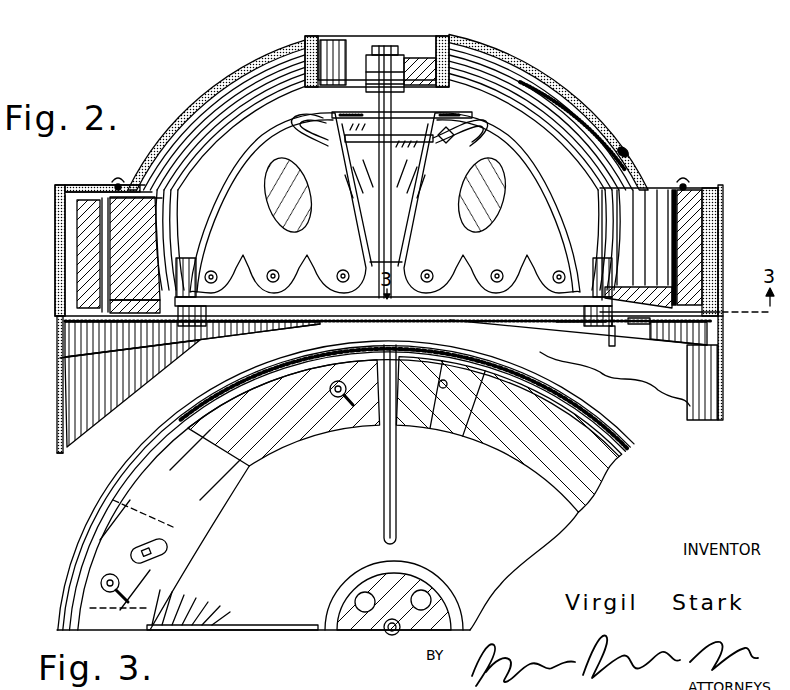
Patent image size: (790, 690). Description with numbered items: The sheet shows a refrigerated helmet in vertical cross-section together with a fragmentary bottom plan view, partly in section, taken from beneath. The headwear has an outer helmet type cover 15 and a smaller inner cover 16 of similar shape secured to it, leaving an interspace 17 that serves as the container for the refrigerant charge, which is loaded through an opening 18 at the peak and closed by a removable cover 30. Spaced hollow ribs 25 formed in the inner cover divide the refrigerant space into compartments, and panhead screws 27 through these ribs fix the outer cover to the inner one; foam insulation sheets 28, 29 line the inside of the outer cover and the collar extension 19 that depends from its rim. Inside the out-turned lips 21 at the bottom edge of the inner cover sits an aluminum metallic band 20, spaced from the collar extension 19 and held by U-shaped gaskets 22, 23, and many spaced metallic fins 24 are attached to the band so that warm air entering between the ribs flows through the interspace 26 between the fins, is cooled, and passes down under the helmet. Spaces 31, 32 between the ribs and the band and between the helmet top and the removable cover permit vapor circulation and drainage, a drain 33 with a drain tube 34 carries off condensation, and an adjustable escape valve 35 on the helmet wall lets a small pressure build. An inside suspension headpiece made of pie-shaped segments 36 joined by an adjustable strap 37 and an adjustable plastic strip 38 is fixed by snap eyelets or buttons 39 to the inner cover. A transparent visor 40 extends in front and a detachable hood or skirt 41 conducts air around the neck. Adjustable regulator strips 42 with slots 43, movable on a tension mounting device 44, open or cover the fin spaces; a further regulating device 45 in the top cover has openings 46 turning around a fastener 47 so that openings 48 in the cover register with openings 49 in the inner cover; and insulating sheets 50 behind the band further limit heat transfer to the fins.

In FIG. 2, the outer helmet type cover 15 is at (163, 133).
In FIG. 2, the inner smaller cover 16 is at (470, 128).
In FIG. 3, the inner smaller cover 16 is at (492, 441).
In FIG. 2, the interspace 17 is at (598, 146).
In FIG. 2, the opening 18 is at (478, 48).
In FIG. 2, the flange or collar extension 19 is at (60, 357).
In FIG. 2, the metallic band 20 is at (102, 279).
In FIG. 2, the out-turned lips 21 is at (287, 78).
In FIG. 2, the U-shaped gasket 22 is at (118, 183).
In FIG. 2, the U-shaped gasket 23 is at (383, 338).
In FIG. 2, the metallic fins 24 is at (36, 271).
In FIG. 2, the hollow ribs 25 is at (213, 92).
In FIG. 2, the interspace between the metallic fins 26 is at (557, 131).
In FIG. 2, the panhead screws 27 is at (126, 184).
In FIG. 2, the insulation sheet 28 is at (279, 55).
In FIG. 2, the insulation sheet 29 is at (57, 212).
In FIG. 2, the removable cover 30 is at (352, 38).
In FIG. 2, the space for vapor circulation and water drainage 31 is at (289, 50).
In FIG. 2, the space for vapor circulation and water drainage 32 is at (640, 328).
In FIG. 2, the drain 33 is at (607, 319).
In FIG. 3, the drain 33 is at (160, 553).
In FIG. 2, the drain tube 34 is at (608, 341).
In FIG. 2, the adjustable escape valve 35 is at (625, 150).
In FIG. 2, the pie-shaped segments 36 is at (346, 221).
In FIG. 2, the adjustable strap 37 is at (385, 161).
In FIG. 2, the adjustable plastic strip 38 is at (393, 309).
In FIG. 2, the snap eyelets or buttons 39 is at (212, 271).
In FIG. 2, the transparent visor 40 is at (60, 410).
In FIG. 3, the transparent visor 40 is at (86, 523).
In FIG. 2, the detachable hood or skirt 41 is at (723, 397).
In FIG. 2, the adjustable regulator strips 42 is at (668, 352).
In FIG. 3, the adjustable regulator strips 42 is at (263, 458).
In FIG. 3, the slots 43 is at (152, 589).
In FIG. 3, the tension mounting device 44 is at (102, 580).
In FIG. 2, the refrigeration regulating device 45 is at (408, 124).
In FIG. 3, the refrigeration regulating device 45 is at (405, 585).
In FIG. 3, the openings 46 is at (362, 596).
In FIG. 2, the fastener 47 is at (394, 62).
In FIG. 2, the openings 48 is at (378, 62).
In FIG. 2, the openings 49 is at (402, 104).
In FIG. 2, the insulating sheets 50 is at (77, 240).